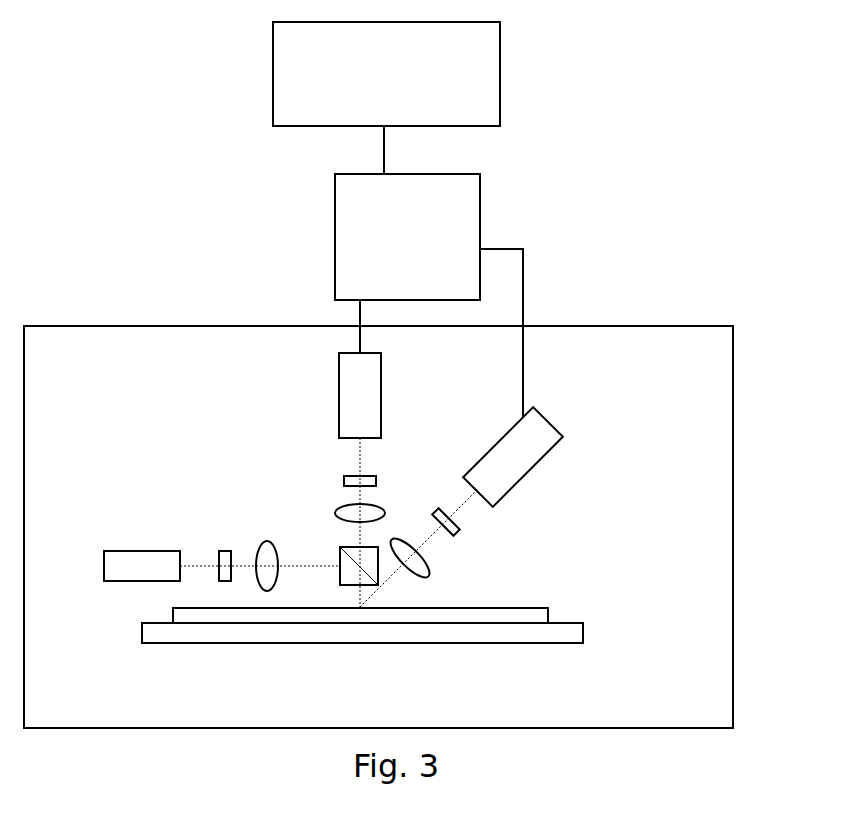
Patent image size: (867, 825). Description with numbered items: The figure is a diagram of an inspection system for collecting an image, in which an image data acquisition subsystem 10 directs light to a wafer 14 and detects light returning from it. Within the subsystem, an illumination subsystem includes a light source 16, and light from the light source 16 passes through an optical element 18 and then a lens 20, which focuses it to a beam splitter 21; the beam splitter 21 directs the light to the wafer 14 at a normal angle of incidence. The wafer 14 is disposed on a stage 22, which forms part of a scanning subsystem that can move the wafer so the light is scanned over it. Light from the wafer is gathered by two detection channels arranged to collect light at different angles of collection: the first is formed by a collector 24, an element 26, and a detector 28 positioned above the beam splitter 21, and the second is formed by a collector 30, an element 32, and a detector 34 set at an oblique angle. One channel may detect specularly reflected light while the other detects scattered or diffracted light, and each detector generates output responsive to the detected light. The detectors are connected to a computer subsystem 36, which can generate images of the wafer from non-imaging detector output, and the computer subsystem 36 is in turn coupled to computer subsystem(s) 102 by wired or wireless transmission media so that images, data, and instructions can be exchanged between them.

The image data acquisition subsystem 10 is at (733, 345).
The computer subsystem(s) 102 is at (386, 74).
The computer subsystem 36 is at (407, 237).
The detector 28 is at (338, 398).
The element 26 is at (343, 478).
The collector 24 is at (337, 508).
The beam splitter 21 is at (352, 546).
The lens 20 is at (264, 541).
The optical element 18 is at (220, 550).
The light source 16 is at (104, 550).
The wafer 14 is at (173, 608).
The stage 22 is at (142, 638).
The collector 30 is at (432, 574).
The element 32 is at (460, 533).
The detector 34 is at (547, 458).